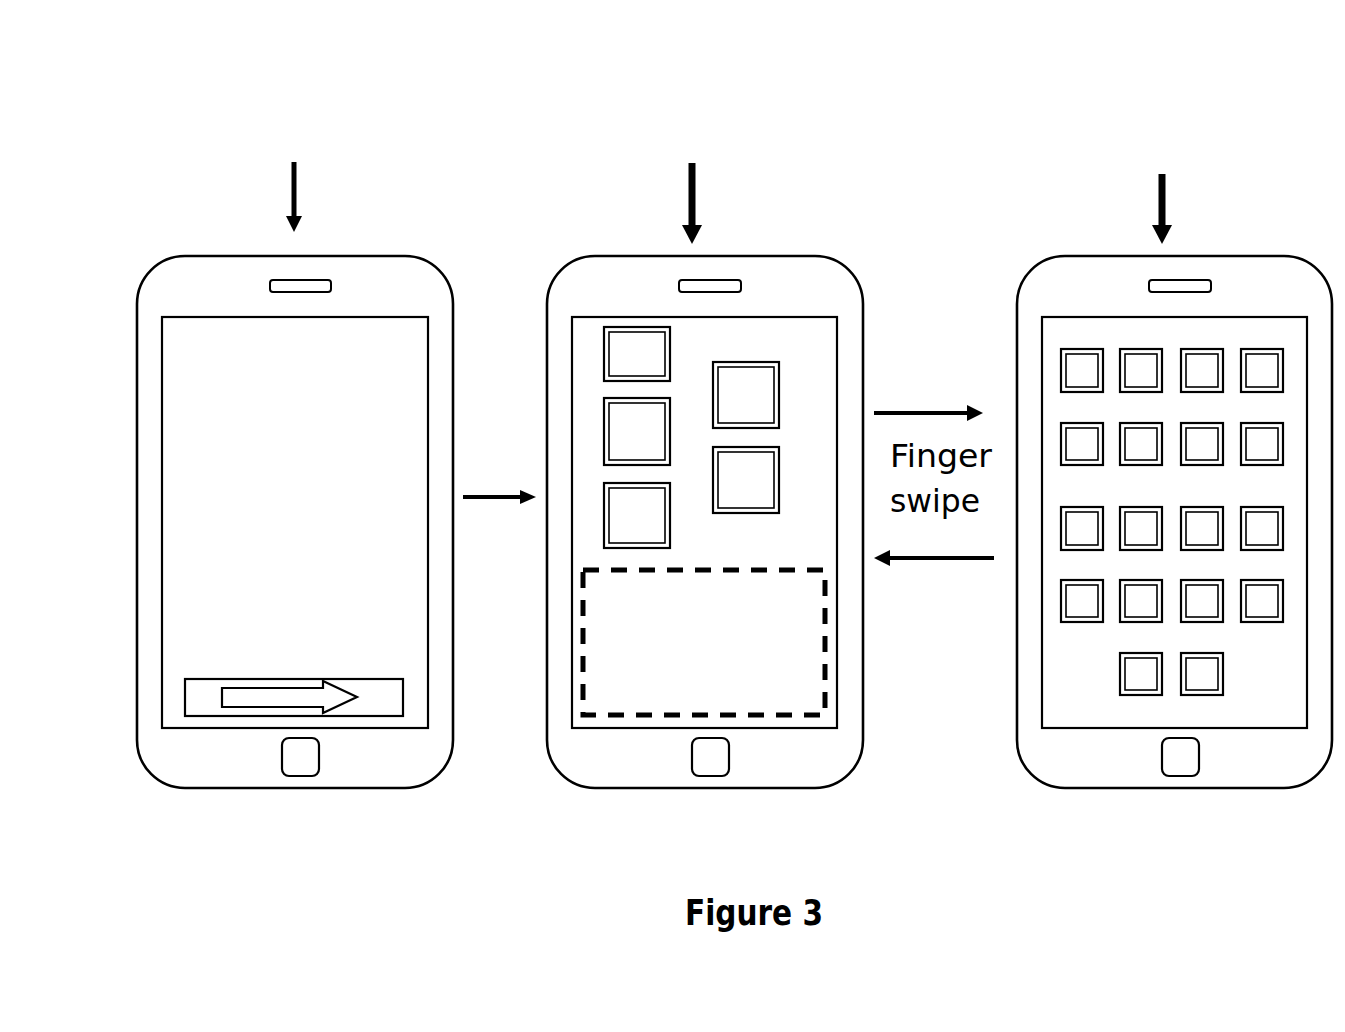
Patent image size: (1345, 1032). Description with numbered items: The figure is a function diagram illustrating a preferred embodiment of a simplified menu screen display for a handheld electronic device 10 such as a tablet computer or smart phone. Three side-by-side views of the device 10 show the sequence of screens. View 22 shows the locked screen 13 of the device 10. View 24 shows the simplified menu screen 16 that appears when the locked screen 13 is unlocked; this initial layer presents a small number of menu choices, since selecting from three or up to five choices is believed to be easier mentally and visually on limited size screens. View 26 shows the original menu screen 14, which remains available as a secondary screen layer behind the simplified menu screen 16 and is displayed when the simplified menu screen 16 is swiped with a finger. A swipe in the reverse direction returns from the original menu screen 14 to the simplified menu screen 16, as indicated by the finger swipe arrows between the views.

The device 10 is at (233, 256).
The locked screen 13 is at (295, 400).
The original menu screen 14 is at (1174, 400).
The simplified menu screen 16 is at (704, 400).
The view 22 is at (295, 380).
The view 24 is at (704, 377).
The view 26 is at (1174, 370).